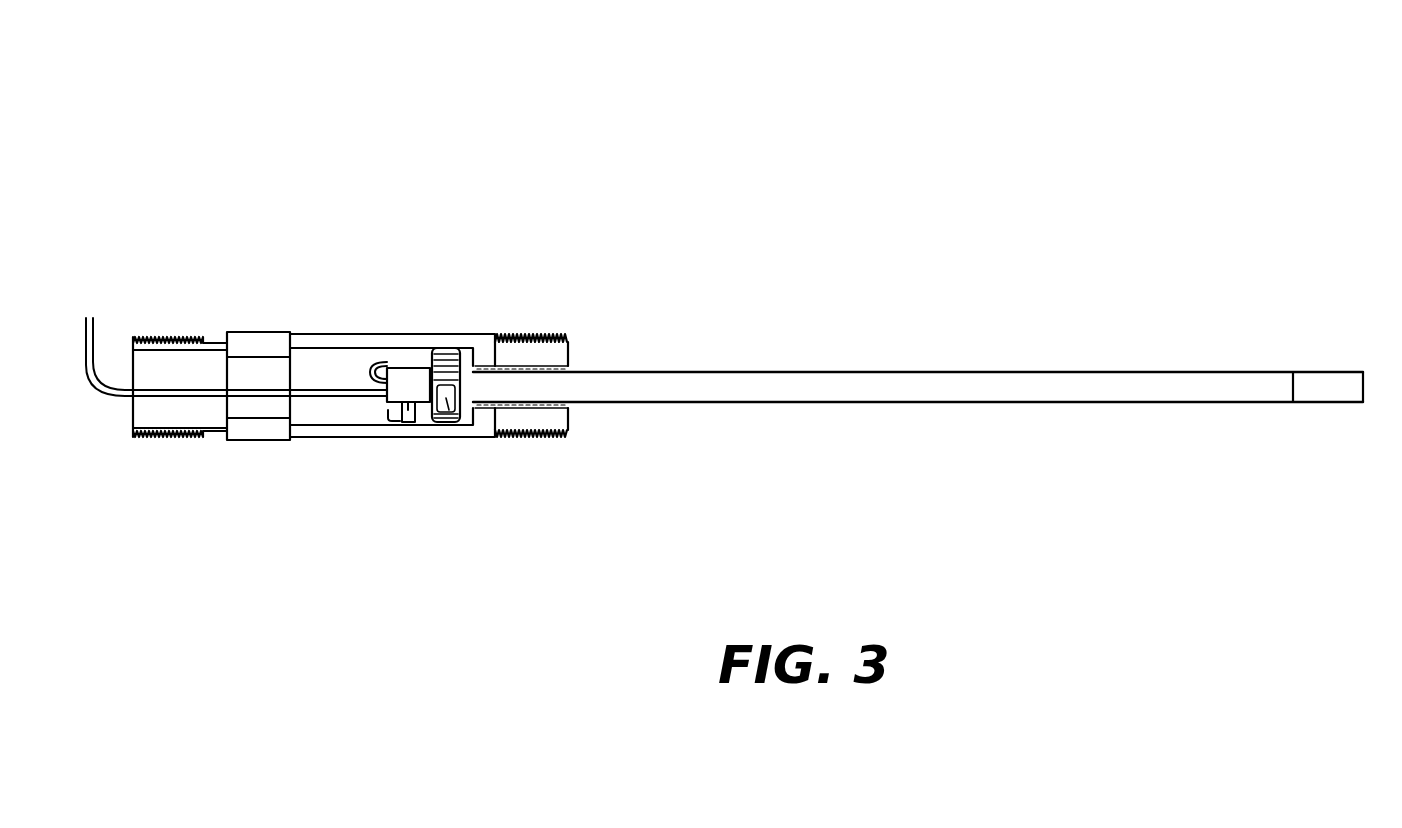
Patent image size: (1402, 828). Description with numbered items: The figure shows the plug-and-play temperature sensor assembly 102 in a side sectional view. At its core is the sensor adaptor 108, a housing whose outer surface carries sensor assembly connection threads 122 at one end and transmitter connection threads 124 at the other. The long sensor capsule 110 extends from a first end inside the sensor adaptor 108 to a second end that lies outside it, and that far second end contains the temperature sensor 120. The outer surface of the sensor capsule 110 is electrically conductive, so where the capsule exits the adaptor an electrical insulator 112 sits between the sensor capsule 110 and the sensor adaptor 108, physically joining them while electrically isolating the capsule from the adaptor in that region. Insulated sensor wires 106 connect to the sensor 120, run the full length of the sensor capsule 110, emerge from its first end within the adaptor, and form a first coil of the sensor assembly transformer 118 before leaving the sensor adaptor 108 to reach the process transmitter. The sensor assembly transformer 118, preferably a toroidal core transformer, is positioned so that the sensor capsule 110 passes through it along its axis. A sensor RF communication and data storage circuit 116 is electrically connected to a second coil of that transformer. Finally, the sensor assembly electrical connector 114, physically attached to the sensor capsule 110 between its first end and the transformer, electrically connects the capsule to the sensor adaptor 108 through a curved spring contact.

The temperature sensor assembly 102 is at (438, 155).
The sensor wires 106 is at (97, 328).
The sensor adaptor 108 is at (316, 328).
The sensor capsule 110 is at (853, 364).
The electrical insulator 112 is at (568, 366).
The sensor assembly electrical connector 114 is at (410, 422).
The sensor RF communication and data storage circuit 116 is at (452, 424).
The sensor assembly transformer 118 is at (444, 348).
The sensor 120 is at (1316, 371).
The sensor assembly connection threads 122 is at (523, 337).
The transmitter connection threads 124 is at (183, 338).